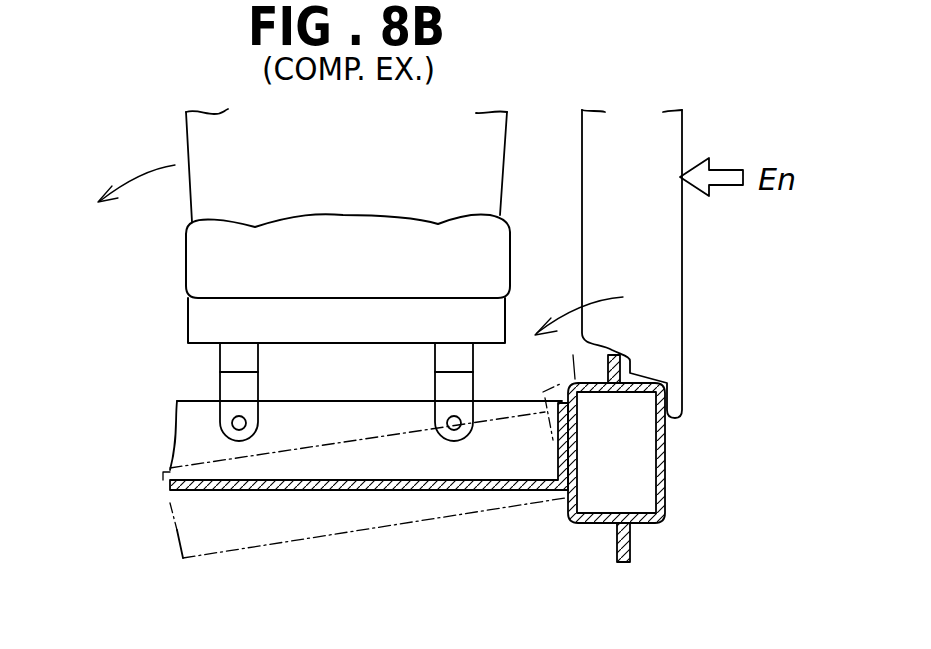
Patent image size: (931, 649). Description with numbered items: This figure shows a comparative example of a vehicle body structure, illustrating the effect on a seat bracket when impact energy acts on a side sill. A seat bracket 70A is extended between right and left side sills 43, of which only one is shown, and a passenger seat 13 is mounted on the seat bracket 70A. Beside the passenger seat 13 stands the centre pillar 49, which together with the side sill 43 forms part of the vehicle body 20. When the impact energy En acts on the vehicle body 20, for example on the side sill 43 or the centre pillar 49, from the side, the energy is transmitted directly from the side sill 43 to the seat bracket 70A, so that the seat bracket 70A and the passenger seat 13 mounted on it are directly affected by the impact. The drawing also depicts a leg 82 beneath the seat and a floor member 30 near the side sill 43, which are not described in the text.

The vehicle body 20 is at (706, 224).
The passenger seat 13 is at (197, 263).
The seat leg bracket 82 is at (222, 355).
The seat bracket 70A is at (188, 432).
The floor panel 30 is at (382, 490).
The side sill 43 is at (578, 413).
The centre pillar 49 is at (673, 262).